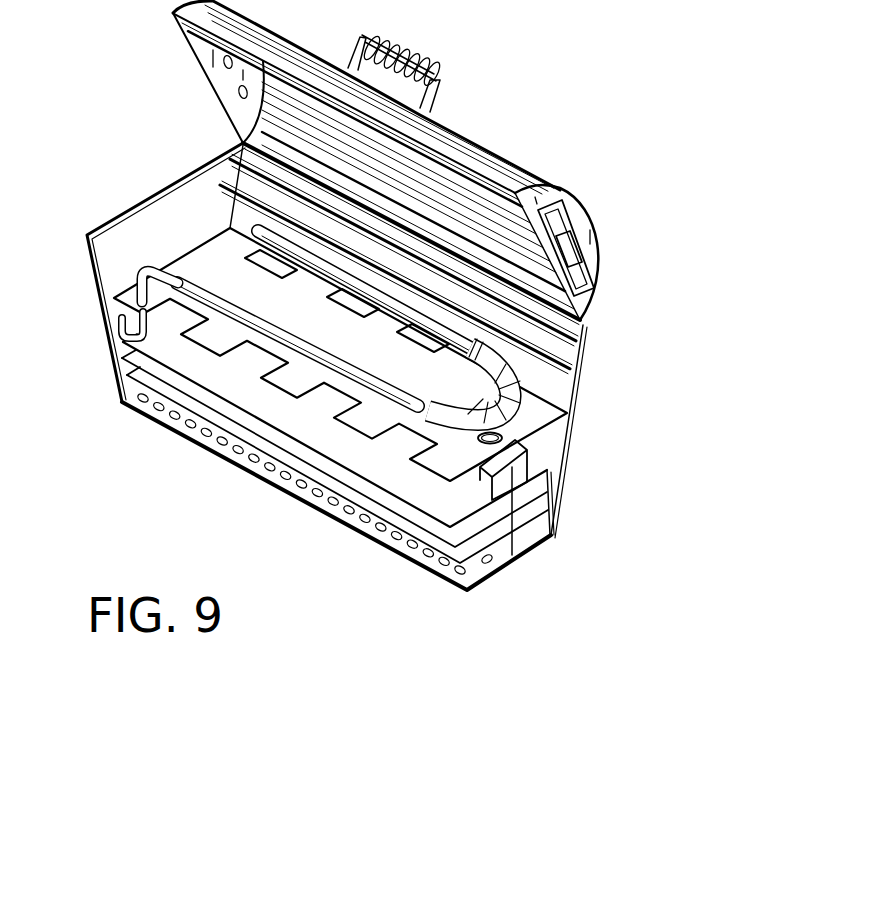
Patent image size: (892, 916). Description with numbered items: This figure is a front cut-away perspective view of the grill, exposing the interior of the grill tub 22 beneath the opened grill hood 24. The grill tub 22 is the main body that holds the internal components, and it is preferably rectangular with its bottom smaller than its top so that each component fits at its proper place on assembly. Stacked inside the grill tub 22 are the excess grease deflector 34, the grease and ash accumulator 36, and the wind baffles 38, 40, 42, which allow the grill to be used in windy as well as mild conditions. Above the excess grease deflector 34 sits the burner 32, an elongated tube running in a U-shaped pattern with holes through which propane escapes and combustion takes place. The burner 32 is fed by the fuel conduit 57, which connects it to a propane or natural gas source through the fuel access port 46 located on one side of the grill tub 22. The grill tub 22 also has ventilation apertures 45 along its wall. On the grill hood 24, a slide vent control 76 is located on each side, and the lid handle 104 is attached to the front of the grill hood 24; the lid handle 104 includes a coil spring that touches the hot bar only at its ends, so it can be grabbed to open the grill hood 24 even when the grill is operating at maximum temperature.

The grill tub 22 is at (583, 340).
The grill hood 24 is at (600, 221).
The burner 32 is at (518, 382).
The excess grease deflector 34 is at (550, 432).
The grease and ash accumulator 36 is at (523, 467).
The wind baffle 38 is at (383, 492).
The wind baffle 40 is at (400, 528).
The wind baffle 42 is at (482, 577).
The ventilation apertures 45 is at (212, 450).
The fuel access port 46 is at (120, 322).
The fuel conduit 57 is at (137, 268).
The slide vent control 76 is at (598, 278).
The lid handle 104 is at (440, 77).